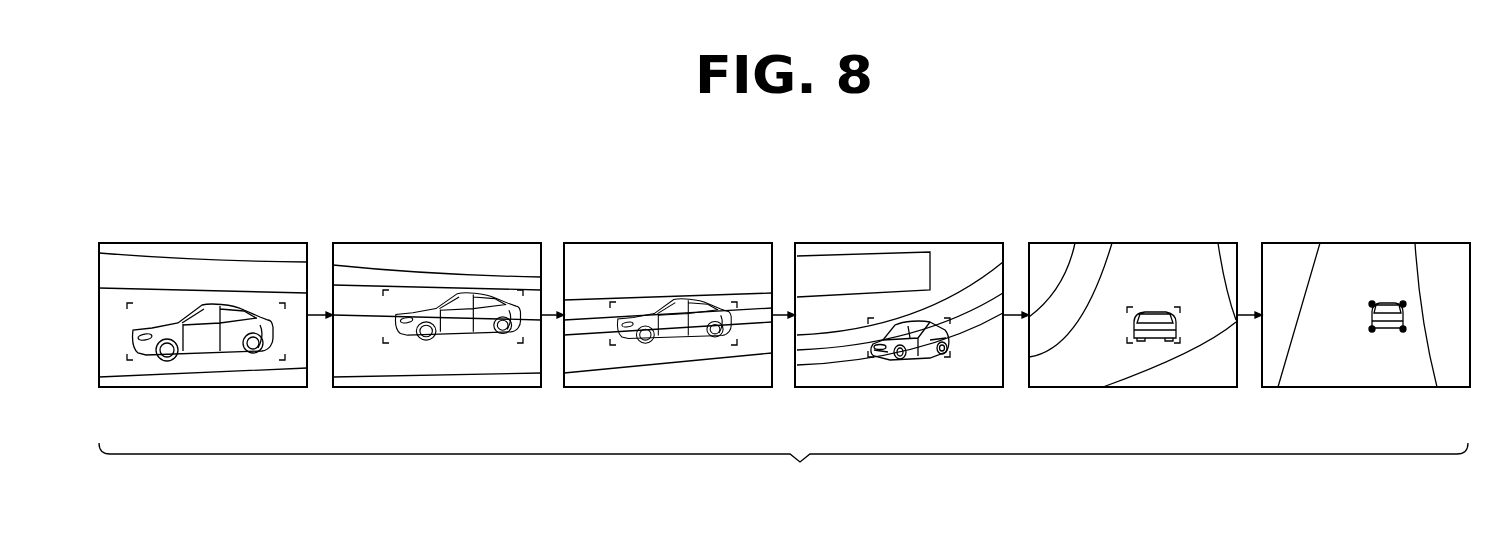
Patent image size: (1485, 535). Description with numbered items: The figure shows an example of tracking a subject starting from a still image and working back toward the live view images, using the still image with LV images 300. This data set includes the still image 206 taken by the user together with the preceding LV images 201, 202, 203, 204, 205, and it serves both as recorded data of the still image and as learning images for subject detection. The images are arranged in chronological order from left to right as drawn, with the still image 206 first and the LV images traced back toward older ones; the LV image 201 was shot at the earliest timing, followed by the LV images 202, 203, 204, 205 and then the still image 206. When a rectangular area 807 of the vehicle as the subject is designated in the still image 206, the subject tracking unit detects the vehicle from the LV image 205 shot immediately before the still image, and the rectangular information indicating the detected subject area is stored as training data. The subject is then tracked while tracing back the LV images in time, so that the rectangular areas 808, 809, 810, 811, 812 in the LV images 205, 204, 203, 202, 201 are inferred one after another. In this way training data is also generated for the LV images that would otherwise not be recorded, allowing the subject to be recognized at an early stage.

The LV image 201 is at (1435, 243).
The LV image 202 is at (1207, 243).
The LV image 203 is at (975, 243).
The LV image 204 is at (745, 243).
The LV image 205 is at (517, 243).
The still image 206 is at (285, 243).
The still image with LV images 300 is at (783, 469).
The rectangular area 807 is at (133, 363).
The rectangular area 808 is at (388, 343).
The rectangular area 809 is at (617, 345).
The rectangular area 810 is at (873, 360).
The rectangular area 811 is at (1173, 343).
The rectangular area 812 is at (1375, 333).